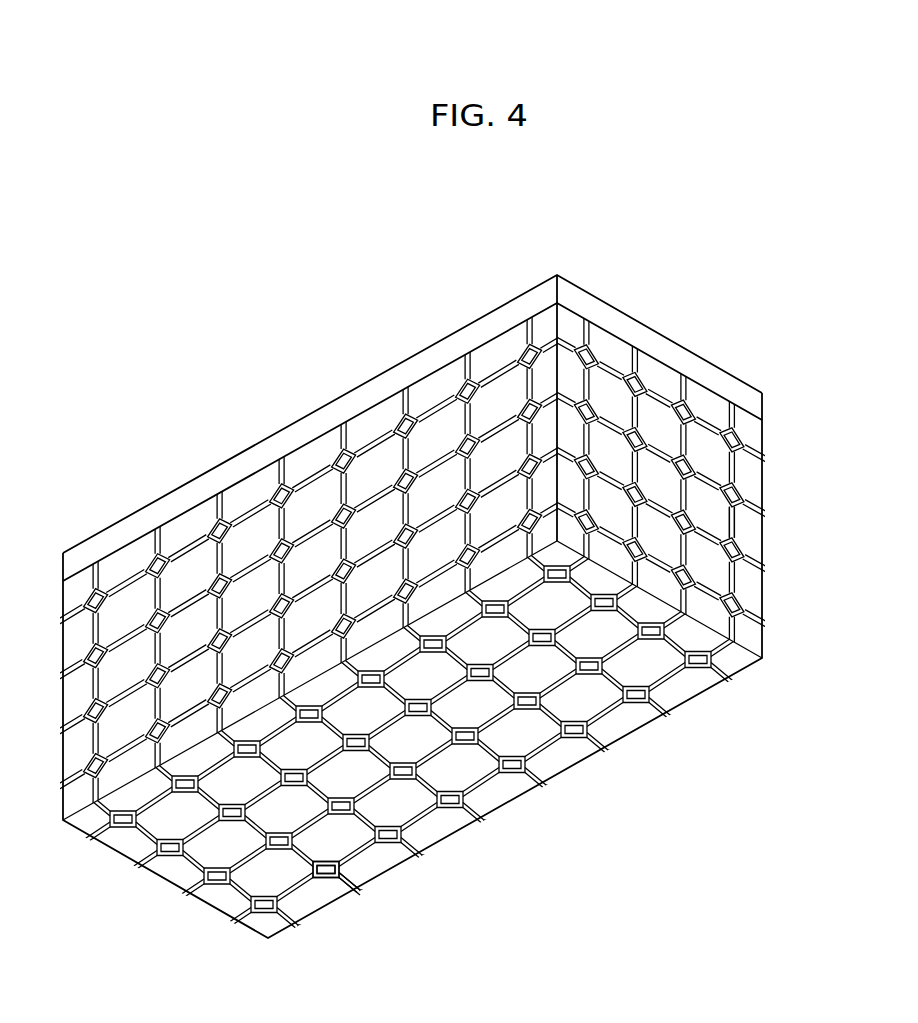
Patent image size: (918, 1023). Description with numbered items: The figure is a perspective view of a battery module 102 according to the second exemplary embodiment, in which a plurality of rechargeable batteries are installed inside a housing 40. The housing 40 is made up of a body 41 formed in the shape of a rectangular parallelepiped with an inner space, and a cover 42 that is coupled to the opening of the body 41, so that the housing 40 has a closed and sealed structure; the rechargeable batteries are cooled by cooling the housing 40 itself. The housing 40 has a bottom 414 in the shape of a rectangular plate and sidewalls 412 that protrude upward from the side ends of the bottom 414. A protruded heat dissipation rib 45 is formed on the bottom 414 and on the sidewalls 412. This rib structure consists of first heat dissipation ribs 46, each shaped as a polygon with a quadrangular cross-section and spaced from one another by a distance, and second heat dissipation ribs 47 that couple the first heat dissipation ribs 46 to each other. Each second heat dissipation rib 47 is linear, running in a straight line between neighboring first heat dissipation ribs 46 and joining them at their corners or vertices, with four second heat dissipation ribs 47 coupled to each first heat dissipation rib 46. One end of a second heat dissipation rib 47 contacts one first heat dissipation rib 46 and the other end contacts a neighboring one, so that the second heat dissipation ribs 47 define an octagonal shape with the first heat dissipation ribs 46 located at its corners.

The battery module 102 is at (337, 356).
The housing 40 is at (673, 338).
The cover 42 is at (752, 403).
The body 41 is at (763, 590).
The sidewalls 412 is at (753, 484).
The bottom 414 is at (696, 683).
The heat dissipation rib 45 is at (375, 982).
The first heat dissipation ribs 46 is at (329, 877).
The second heat dissipation ribs 47 is at (348, 883).